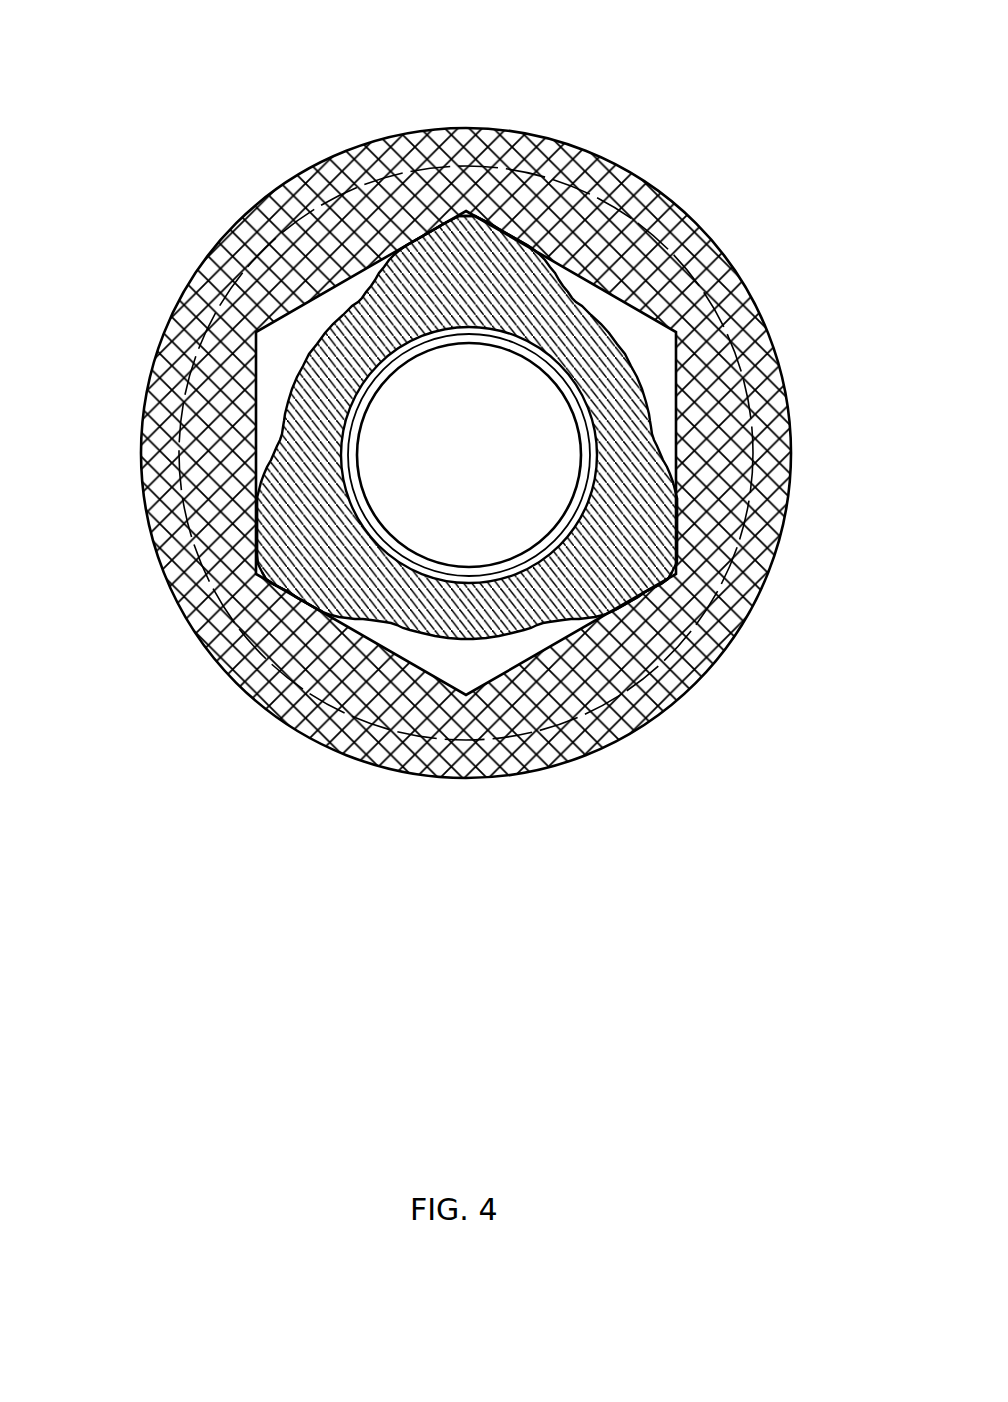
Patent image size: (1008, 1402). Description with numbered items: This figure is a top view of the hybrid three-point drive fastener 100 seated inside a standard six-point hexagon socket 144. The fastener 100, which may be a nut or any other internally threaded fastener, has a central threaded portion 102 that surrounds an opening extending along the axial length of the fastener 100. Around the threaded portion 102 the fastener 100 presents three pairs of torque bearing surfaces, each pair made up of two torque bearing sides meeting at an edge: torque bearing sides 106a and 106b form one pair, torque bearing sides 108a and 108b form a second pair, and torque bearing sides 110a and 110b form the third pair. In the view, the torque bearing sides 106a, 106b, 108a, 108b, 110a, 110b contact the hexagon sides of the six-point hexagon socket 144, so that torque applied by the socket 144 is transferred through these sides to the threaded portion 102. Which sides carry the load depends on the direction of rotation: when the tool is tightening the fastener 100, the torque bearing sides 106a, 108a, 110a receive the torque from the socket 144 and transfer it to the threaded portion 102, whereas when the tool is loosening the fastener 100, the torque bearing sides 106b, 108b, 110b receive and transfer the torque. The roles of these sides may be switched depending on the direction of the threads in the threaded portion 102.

The fastener 100 is at (315, 337).
The threaded portion 102 is at (428, 557).
The torque bearing side 106a is at (440, 222).
The torque bearing side 106b is at (500, 215).
The torque bearing side 108a is at (687, 540).
The torque bearing side 108b is at (657, 597).
The torque bearing side 110a is at (290, 597).
The torque bearing side 110b is at (250, 538).
The six-point hexagon socket 144 is at (172, 595).